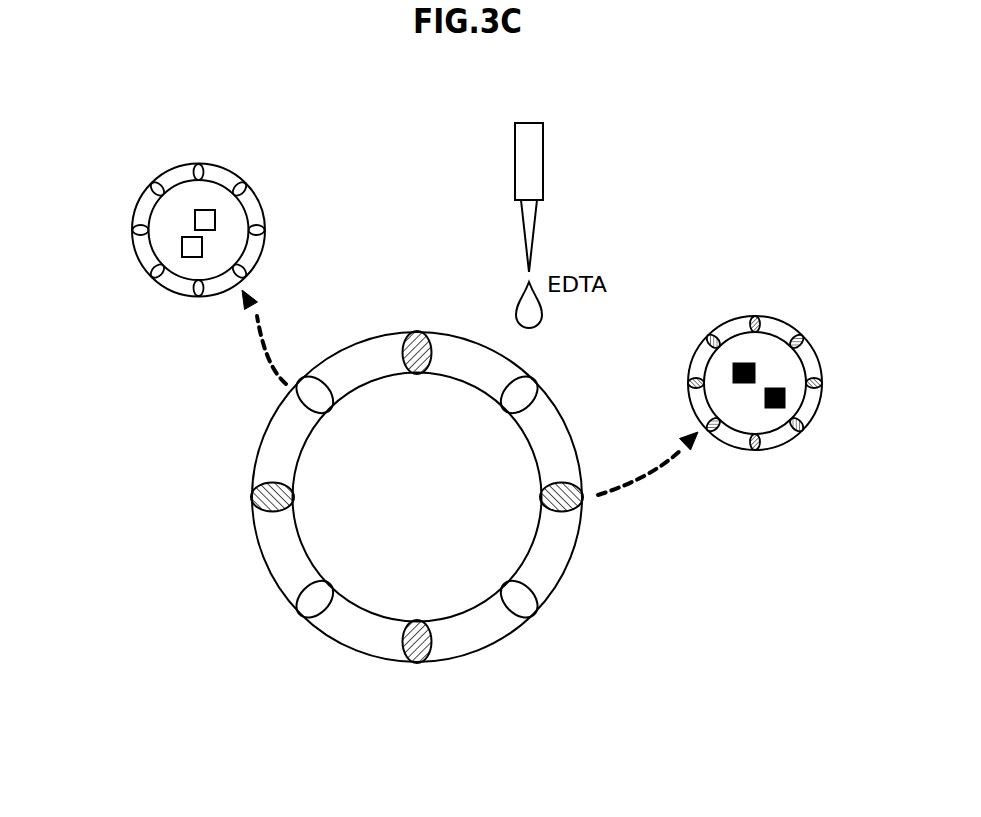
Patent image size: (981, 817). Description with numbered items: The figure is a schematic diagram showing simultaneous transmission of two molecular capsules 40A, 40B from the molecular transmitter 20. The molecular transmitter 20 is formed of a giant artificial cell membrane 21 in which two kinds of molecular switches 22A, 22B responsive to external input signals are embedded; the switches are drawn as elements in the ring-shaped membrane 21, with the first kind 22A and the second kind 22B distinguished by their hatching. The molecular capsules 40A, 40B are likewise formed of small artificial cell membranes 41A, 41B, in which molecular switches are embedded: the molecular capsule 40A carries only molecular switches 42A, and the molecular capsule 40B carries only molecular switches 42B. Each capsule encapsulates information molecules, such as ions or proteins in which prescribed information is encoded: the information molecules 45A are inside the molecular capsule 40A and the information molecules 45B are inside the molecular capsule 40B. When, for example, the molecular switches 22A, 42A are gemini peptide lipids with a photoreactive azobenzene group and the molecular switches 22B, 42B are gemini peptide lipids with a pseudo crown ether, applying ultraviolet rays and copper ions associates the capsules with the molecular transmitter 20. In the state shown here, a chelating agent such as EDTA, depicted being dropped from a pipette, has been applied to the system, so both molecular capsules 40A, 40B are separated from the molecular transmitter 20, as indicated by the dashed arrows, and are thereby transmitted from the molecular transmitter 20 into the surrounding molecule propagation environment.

The molecular transmitter 20 is at (446, 489).
The artificial cell membrane 21 is at (345, 628).
The molecular switch 22A is at (319, 393).
The molecular switch 22B is at (567, 505).
The molecular capsule 40A is at (198, 204).
The artificial cell membrane 41A is at (147, 207).
The molecular switch 42A is at (245, 257).
The information molecule 45A is at (208, 210).
The molecular capsule 40B is at (781, 383).
The artificial cell membrane 41B is at (813, 360).
The molecular switch 42B is at (725, 433).
The information molecule 45B is at (745, 363).